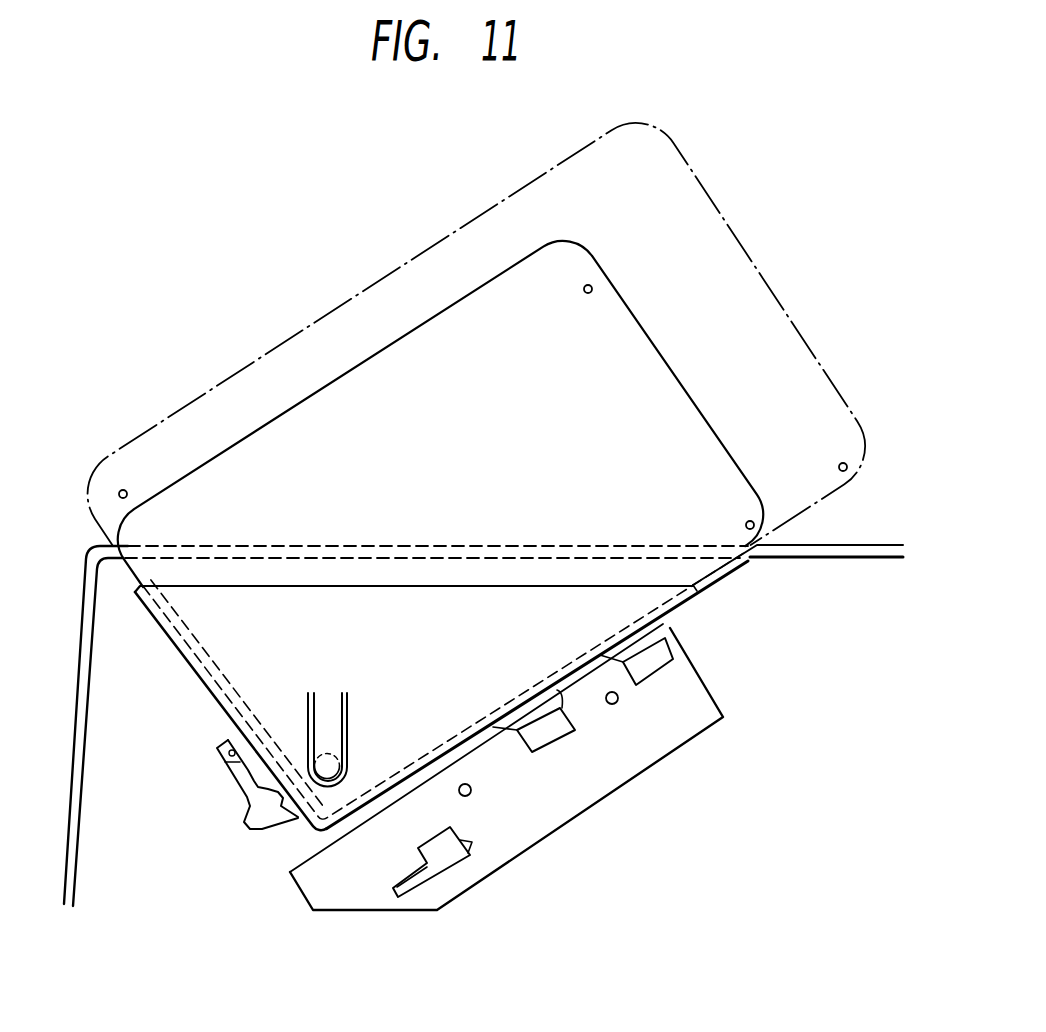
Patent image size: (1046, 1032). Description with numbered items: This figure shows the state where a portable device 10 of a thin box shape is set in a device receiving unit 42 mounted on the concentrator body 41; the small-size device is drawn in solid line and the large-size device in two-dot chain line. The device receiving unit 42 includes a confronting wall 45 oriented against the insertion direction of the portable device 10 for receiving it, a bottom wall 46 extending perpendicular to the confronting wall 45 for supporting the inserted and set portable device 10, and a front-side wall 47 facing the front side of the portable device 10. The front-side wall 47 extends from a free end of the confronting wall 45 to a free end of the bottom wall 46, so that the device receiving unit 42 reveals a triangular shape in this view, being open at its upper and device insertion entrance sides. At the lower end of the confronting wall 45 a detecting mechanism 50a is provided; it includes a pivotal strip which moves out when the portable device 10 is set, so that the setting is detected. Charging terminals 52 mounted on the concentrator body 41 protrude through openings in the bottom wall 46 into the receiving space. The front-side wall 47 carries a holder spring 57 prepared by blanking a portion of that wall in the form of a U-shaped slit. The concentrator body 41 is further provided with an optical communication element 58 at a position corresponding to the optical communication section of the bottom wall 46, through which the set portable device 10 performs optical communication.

The portable device 10 is at (394, 260).
The concentrator body 41 is at (853, 544).
The device receiving unit 42 is at (366, 582).
The confronting wall 45 is at (204, 688).
The bottom wall 46 is at (675, 604).
The front-side wall 47 is at (553, 600).
The detecting mechanism 50a is at (245, 798).
The charging terminals 52 is at (598, 675).
The holder spring 57 is at (317, 750).
The optical communication element 58 is at (452, 850).